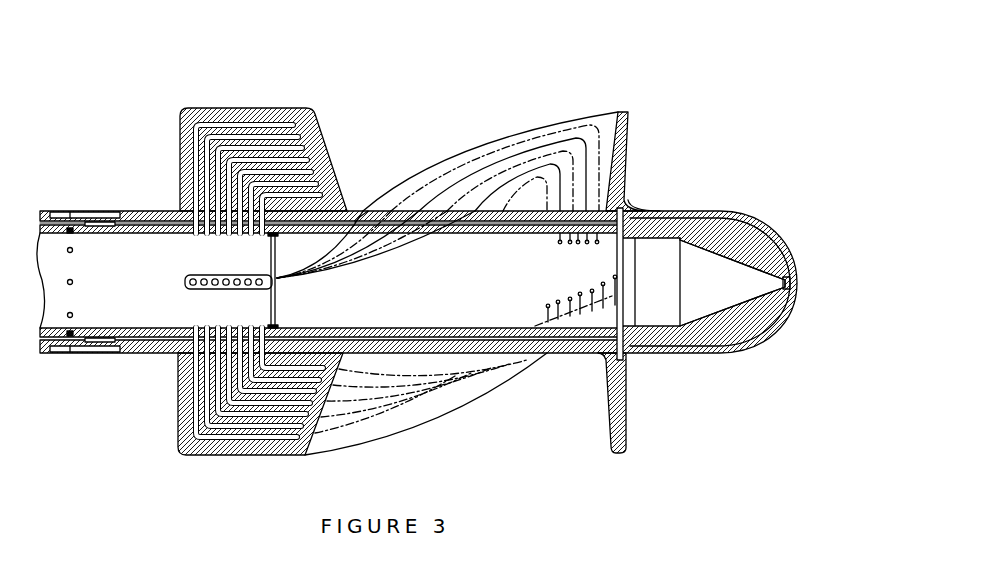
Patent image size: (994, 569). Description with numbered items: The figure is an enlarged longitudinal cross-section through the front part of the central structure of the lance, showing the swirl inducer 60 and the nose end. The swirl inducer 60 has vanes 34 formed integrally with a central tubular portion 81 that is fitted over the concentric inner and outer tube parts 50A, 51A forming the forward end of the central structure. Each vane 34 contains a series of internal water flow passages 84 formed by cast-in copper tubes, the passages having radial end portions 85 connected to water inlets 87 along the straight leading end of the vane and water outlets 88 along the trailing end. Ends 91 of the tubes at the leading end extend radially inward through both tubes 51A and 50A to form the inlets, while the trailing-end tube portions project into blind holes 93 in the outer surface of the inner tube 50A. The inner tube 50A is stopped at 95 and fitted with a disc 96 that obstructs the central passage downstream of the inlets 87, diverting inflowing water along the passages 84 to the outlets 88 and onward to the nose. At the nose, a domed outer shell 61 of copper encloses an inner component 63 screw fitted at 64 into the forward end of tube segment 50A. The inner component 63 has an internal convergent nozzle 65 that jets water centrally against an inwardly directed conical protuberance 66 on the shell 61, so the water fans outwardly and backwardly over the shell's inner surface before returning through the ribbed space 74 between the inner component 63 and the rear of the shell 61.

The swirl vane 34 is at (504, 110).
The swirl inducer 60 is at (736, 229).
The domed outer shell 61 is at (760, 210).
The inner component 63 is at (790, 253).
The screw fitting 64 is at (619, 250).
The internal convergent nozzle 65 is at (684, 322).
The conical protuberance 66 is at (782, 283).
The space 74 is at (660, 207).
The central tubular portion 81 is at (383, 205).
The internal water flow passage 84 is at (243, 125).
The radial end portion 85 is at (190, 180).
The water inlet 87 is at (192, 237).
The water outlet 88 is at (548, 243).
The tube end 91 is at (260, 237).
The blind hole 93 is at (538, 310).
The stop 95 is at (288, 234).
The disc 96 is at (278, 294).
The inner tube segment 50A is at (448, 237).
The outer tube part 51A is at (363, 222).